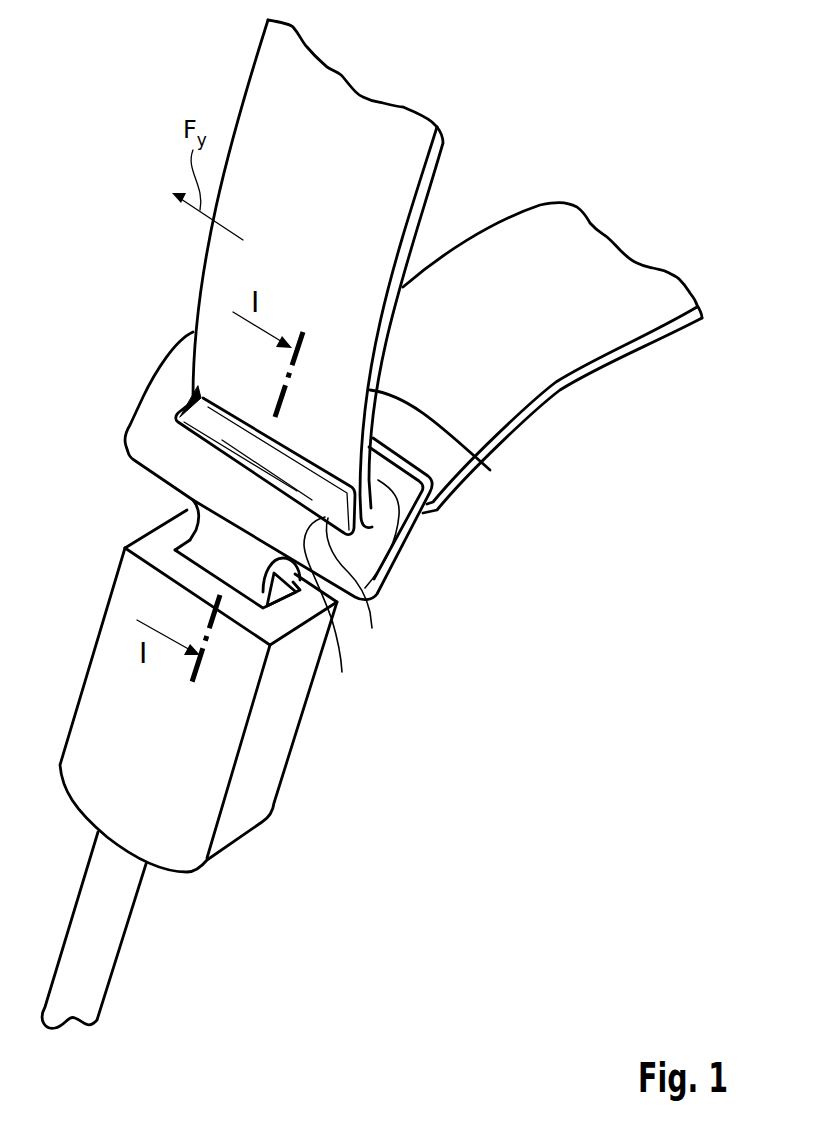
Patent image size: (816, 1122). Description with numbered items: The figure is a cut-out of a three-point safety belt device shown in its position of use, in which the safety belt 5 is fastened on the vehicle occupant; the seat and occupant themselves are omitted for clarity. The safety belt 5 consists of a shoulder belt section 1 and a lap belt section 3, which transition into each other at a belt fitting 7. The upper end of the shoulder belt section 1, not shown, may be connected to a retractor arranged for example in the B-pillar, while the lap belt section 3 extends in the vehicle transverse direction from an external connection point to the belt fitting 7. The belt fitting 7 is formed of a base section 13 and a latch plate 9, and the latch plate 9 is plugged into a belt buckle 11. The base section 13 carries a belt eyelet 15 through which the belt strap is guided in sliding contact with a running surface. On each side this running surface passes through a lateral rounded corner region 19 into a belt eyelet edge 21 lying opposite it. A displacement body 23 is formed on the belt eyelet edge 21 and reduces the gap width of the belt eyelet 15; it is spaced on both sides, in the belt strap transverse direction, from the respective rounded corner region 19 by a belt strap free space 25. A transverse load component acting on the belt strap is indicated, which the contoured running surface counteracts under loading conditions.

The shoulder belt section 1 is at (488, 463).
The lap belt section 3 is at (493, 418).
The safety belt 5 is at (563, 435).
The belt fitting 7 is at (67, 370).
The latch plate 9 is at (213, 530).
The belt buckle 11 is at (93, 712).
The base section 13 is at (147, 440).
The belt eyelet 15 is at (187, 392).
The rounded corner region 19 is at (196, 388).
The belt eyelet edge 21 is at (331, 614).
The displacement body 23 is at (359, 587).
The belt strap free space 25 is at (398, 560).